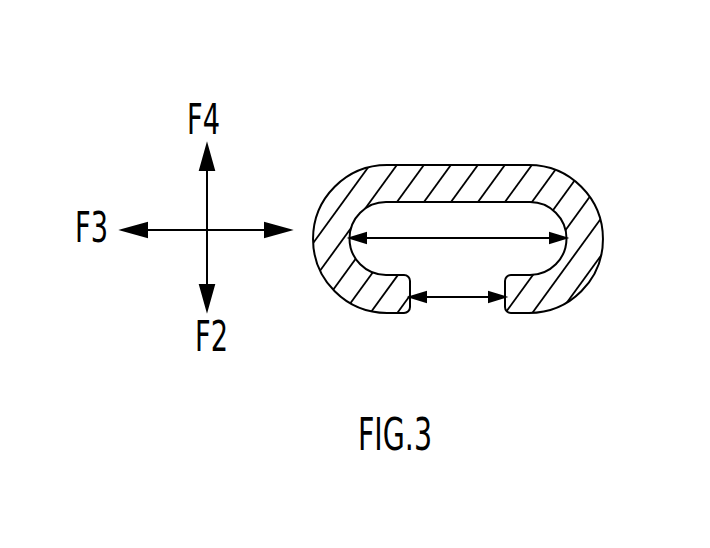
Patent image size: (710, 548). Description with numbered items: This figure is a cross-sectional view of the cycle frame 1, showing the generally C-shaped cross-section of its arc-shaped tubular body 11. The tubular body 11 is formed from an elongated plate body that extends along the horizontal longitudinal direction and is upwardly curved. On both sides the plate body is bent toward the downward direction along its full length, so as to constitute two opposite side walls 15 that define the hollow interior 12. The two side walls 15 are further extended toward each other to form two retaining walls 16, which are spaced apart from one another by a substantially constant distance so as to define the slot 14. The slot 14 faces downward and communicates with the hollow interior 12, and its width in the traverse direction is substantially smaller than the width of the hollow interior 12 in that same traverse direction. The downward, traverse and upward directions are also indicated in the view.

The cycle frame 1 is at (662, 80).
The arc-shaped tubular body 11 is at (512, 182).
The hollow interior 12 is at (408, 215).
The slot 14 is at (505, 300).
The side walls 15 is at (585, 238).
The retaining walls 16 is at (535, 290).